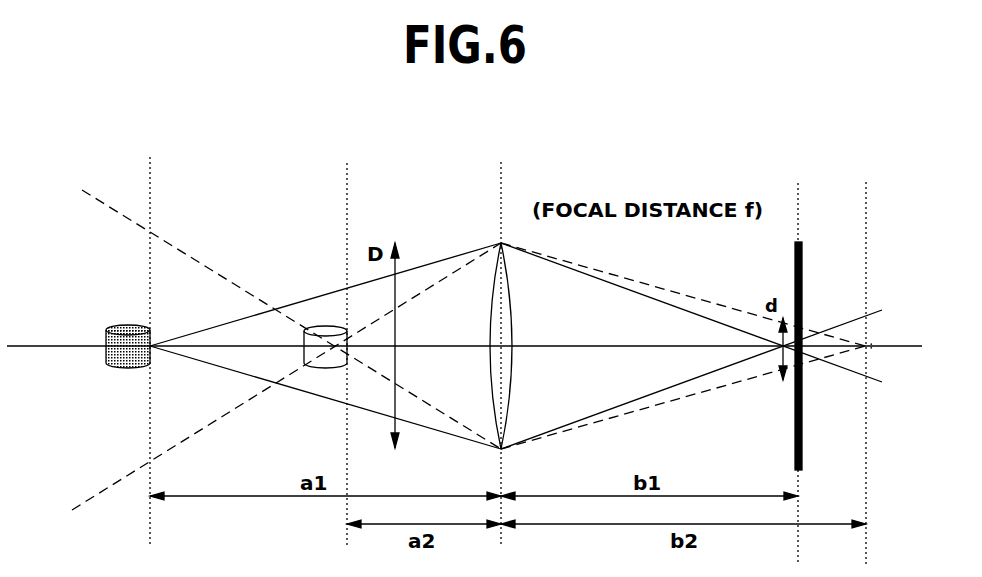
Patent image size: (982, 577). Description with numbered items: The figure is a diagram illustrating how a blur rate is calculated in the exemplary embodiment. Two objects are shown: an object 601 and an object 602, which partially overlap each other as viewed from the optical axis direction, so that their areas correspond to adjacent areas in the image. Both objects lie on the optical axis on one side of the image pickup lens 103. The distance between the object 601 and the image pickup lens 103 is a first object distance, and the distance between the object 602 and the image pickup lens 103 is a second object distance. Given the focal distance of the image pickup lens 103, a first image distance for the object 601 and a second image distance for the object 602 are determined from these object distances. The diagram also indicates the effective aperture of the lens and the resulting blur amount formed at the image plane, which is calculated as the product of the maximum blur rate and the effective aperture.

The object 601 is at (128, 325).
The object 602 is at (304, 340).
The image pickup lens 103 is at (492, 279).